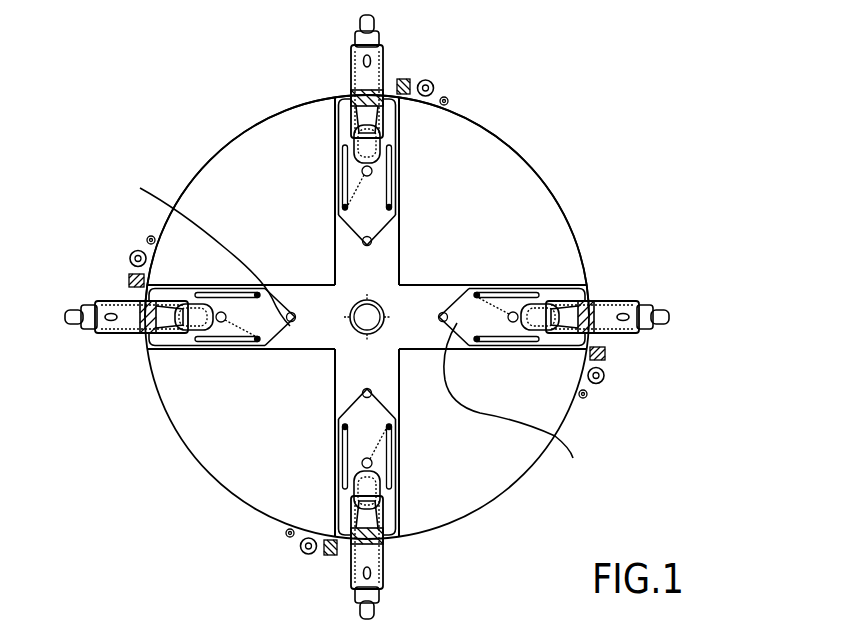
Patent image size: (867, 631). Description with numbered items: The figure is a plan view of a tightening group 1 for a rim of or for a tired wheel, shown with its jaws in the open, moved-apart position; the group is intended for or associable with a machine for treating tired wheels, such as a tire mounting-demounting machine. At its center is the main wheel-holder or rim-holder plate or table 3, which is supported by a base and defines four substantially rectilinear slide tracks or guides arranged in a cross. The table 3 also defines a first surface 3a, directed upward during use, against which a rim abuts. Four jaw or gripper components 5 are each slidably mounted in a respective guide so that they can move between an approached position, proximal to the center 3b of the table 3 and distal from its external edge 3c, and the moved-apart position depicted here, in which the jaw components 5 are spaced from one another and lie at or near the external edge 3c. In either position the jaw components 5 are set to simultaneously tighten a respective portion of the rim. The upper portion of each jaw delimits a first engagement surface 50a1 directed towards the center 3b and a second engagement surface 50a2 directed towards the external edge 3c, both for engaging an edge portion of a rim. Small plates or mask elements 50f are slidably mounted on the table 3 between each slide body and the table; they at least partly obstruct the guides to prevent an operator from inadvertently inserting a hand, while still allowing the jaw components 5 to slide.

The tightening group 1 is at (590, 175).
The main wheel-holder plate or table 3 is at (497, 478).
The first surface 3a is at (473, 142).
The center 3b is at (350, 334).
The external edge 3c is at (210, 159).
The jaw component 5 is at (375, 90).
The small plate or mask element 50f is at (355, 328).
The first engagement surface 50a1 is at (605, 382).
The second engagement surface 50a2 is at (310, 556).